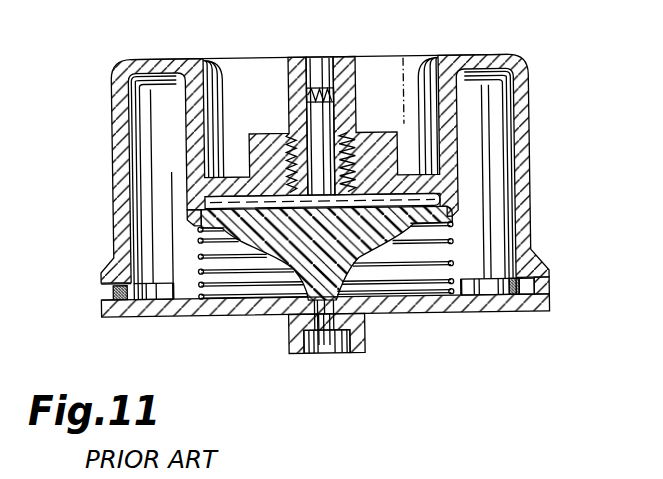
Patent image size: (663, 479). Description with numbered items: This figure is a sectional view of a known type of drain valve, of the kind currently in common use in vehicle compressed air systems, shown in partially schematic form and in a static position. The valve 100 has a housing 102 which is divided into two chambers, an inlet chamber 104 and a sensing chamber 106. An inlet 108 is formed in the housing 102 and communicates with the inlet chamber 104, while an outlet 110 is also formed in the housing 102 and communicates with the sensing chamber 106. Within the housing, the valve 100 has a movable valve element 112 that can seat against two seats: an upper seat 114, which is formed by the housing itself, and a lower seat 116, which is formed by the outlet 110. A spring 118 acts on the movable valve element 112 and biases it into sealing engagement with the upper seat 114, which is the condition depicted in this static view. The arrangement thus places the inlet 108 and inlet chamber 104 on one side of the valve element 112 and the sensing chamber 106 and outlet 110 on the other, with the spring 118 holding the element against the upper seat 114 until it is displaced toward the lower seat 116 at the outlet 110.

The valve 100 is at (335, 217).
The housing 102 is at (536, 132).
The inlet chamber 104 is at (437, 201).
The sensing chamber 106 is at (497, 244).
The inlet 108 is at (326, 72).
The outlet 110 is at (333, 357).
The movable valve element 112 is at (457, 218).
The upper seat 114 is at (192, 223).
The lower seat 116 is at (300, 314).
The spring 118 is at (452, 265).